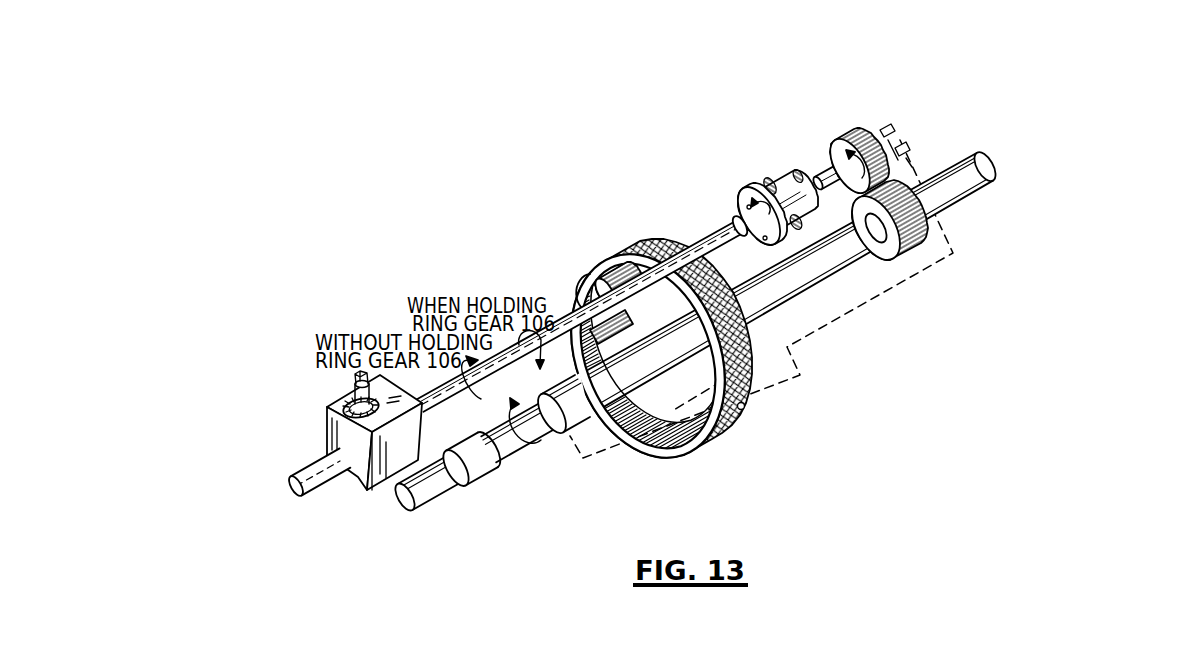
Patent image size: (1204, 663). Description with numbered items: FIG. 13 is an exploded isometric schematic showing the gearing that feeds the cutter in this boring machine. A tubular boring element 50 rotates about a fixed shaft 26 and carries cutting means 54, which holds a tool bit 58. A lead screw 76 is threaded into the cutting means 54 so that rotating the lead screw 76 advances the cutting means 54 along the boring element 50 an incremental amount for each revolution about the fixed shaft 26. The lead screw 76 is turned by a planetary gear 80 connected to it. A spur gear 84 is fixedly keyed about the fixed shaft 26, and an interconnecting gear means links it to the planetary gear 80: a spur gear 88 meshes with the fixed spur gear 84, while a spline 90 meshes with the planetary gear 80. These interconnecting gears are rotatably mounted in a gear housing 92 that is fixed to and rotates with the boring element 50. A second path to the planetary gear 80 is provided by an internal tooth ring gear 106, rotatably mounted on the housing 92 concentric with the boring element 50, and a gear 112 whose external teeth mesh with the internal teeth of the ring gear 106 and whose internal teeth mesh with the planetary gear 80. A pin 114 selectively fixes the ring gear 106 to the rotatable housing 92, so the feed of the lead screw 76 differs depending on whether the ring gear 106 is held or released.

The fixed shaft 26 is at (847, 253).
The boring element 50 is at (485, 470).
The cutting means 54 is at (332, 441).
The tool bit 58 is at (350, 400).
The lead screw 76 is at (428, 392).
The planetary gear 80 is at (782, 175).
The spur gear 84 is at (932, 245).
The spur gear 88 is at (912, 175).
The spline 90 is at (832, 175).
The gear housing 92 is at (855, 312).
The internal tooth ring gear 106 is at (687, 231).
The gear with external and internal teeth 112 is at (597, 292).
The pin 114 is at (745, 410).